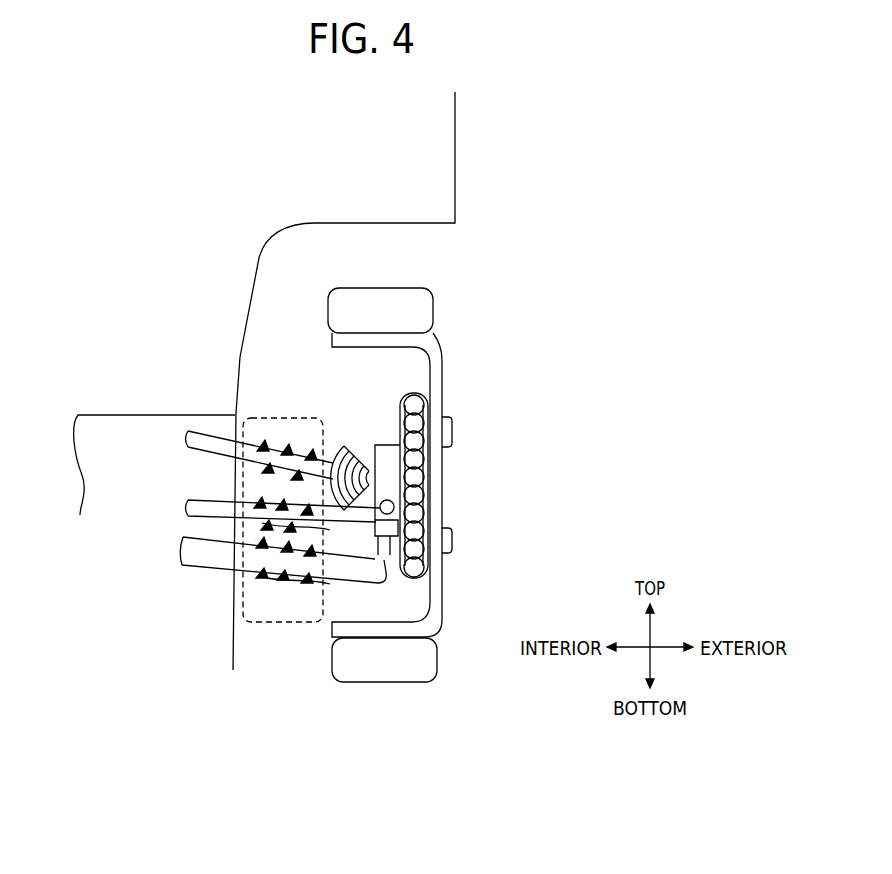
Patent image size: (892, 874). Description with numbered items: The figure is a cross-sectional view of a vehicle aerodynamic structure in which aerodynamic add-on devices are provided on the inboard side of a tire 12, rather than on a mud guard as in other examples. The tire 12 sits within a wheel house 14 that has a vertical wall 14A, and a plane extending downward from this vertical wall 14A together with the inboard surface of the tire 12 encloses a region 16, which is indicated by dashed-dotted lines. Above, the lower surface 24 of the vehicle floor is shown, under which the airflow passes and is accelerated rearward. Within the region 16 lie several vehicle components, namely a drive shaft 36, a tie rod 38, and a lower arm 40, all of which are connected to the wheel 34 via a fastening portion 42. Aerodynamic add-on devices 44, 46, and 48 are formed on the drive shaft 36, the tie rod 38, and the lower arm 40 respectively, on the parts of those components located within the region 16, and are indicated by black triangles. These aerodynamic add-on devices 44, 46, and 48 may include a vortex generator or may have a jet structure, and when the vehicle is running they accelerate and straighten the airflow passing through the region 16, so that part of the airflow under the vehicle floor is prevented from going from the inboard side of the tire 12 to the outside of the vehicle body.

The tire 12 is at (437, 657).
The wheel house 14 is at (318, 222).
The vertical wall 14A is at (240, 338).
The region 16 is at (283, 623).
The lower surface 24 is at (149, 477).
The wheel 34 is at (443, 352).
The drive shaft 36 is at (188, 442).
The tie rod 38 is at (188, 502).
The lower arm 40 is at (183, 553).
The fastening portion 42 is at (467, 405).
The aerodynamic add-on device 44 is at (333, 472).
The aerodynamic add-on device 46 is at (262, 523).
The aerodynamic add-on device 48 is at (262, 577).